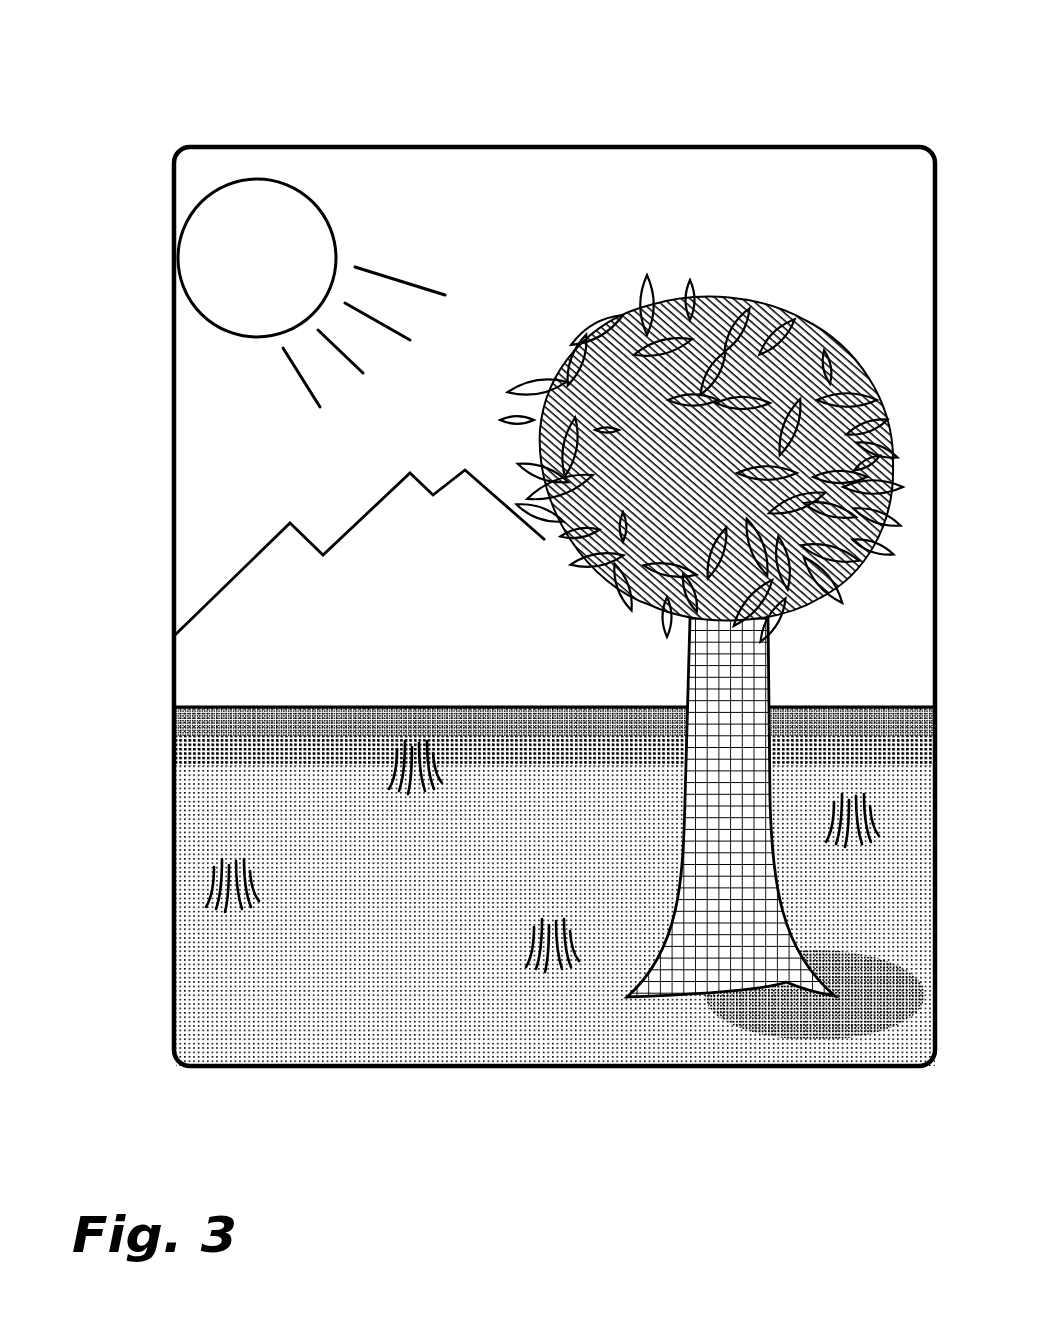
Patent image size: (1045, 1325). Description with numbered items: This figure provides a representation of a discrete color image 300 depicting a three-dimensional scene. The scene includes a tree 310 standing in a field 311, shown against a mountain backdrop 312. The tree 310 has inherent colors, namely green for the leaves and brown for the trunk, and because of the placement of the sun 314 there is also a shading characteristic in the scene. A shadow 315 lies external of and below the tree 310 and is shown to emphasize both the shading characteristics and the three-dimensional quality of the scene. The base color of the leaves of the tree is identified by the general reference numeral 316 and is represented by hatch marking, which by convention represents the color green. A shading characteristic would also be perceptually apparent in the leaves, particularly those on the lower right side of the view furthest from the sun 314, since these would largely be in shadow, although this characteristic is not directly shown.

The discrete color image 300 is at (235, 60).
The tree 310 is at (768, 236).
The field 311 is at (555, 913).
The mountain backdrop 312 is at (253, 665).
The sun 314 is at (236, 293).
The shadow 315 is at (815, 995).
The base color of the leaves 316 is at (740, 322).